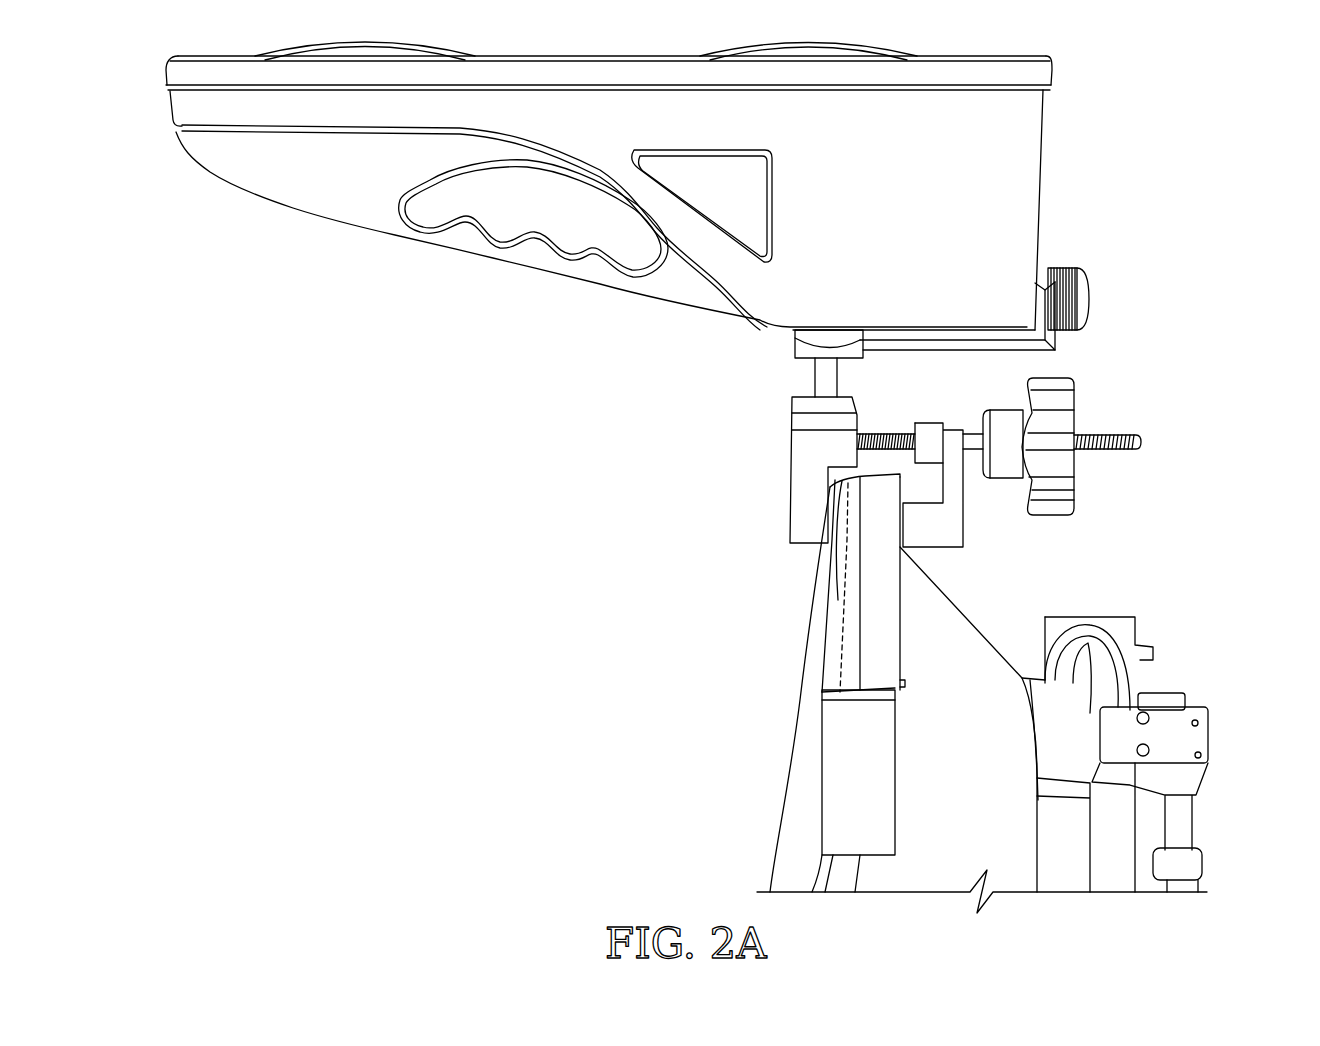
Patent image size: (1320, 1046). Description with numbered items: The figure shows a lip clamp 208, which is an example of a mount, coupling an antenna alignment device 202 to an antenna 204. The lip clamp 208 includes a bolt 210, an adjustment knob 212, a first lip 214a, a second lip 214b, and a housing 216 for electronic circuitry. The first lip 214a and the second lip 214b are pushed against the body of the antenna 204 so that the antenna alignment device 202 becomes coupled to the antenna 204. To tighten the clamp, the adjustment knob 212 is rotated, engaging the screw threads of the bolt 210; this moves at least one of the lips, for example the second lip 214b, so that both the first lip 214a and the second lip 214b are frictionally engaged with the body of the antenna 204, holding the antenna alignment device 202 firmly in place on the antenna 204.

The antenna alignment device 202 is at (1045, 76).
The antenna 204 is at (788, 784).
The lip clamp 208 is at (944, 479).
The bolt 210 is at (1141, 446).
The adjustment knob 212 is at (1058, 405).
The first lip 214a is at (800, 528).
The second lip 214b is at (948, 530).
The housing 216 is at (815, 368).